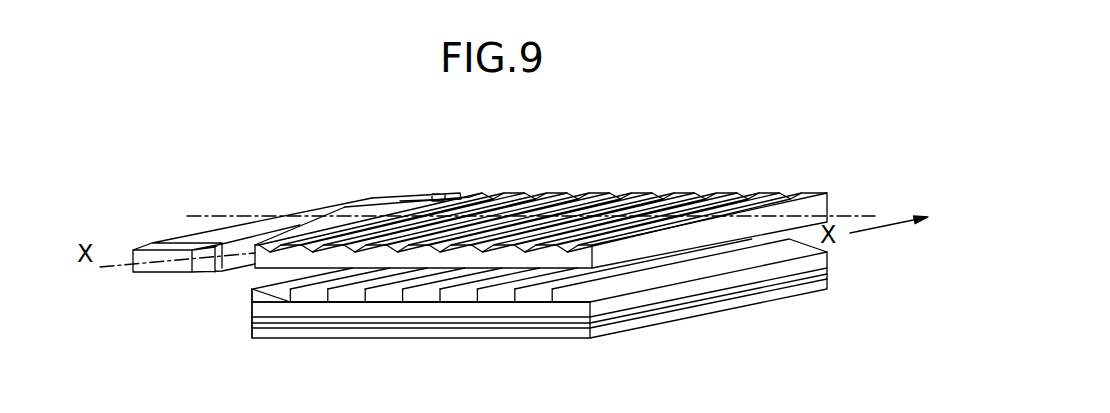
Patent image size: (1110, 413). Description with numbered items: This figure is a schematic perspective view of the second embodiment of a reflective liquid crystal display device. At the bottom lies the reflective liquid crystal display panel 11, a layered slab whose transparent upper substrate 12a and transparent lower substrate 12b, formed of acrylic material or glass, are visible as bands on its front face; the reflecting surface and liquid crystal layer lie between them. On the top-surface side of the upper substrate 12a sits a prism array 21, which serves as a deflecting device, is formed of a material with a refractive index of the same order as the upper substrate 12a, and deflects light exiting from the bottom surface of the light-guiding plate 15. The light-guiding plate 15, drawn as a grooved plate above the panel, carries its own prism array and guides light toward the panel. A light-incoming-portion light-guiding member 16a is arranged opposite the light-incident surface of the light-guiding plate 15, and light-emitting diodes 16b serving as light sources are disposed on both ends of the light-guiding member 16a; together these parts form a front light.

The reflective liquid crystal display panel 11 is at (275, 308).
The transparent upper substrate 12a is at (446, 308).
The transparent lower substrate 12b is at (529, 330).
The light-guiding plate 15 is at (343, 254).
The light-incoming-portion light-guiding member 16a is at (344, 207).
The light-emitting diodes 16b is at (437, 194).
The prism array 21 is at (253, 293).